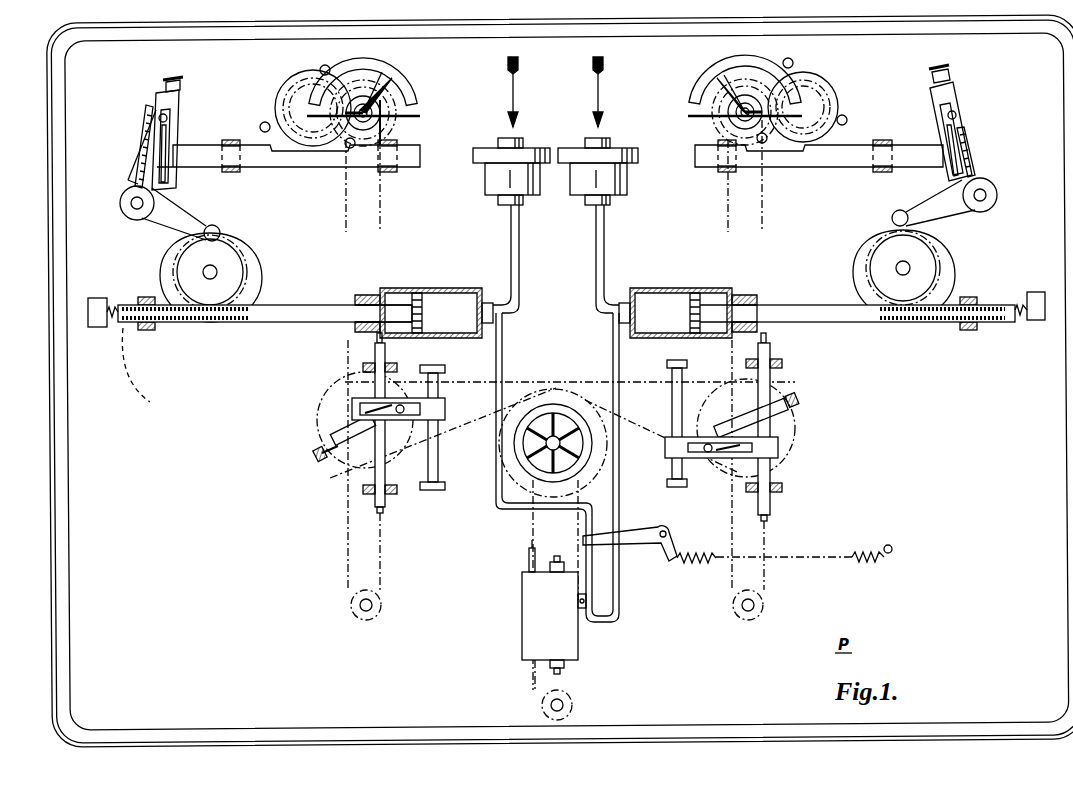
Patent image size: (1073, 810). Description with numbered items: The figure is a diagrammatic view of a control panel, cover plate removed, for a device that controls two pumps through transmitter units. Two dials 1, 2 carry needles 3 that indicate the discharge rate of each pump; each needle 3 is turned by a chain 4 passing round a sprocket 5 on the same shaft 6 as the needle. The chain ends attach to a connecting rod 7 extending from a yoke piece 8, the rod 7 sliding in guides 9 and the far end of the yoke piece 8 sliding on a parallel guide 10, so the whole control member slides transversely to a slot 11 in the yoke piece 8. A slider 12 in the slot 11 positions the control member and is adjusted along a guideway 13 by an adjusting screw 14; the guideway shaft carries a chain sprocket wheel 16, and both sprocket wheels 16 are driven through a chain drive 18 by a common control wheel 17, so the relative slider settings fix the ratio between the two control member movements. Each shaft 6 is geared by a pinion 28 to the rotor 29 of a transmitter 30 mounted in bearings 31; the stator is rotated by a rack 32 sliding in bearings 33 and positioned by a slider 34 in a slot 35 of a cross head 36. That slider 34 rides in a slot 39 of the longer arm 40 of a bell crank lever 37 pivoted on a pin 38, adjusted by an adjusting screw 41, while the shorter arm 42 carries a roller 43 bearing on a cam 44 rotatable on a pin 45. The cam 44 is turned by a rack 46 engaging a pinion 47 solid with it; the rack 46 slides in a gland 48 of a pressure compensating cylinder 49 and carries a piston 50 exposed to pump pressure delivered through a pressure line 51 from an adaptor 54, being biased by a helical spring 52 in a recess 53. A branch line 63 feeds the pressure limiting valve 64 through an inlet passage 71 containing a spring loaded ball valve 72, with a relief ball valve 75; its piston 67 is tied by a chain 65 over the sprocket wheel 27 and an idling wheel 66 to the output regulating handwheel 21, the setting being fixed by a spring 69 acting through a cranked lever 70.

The dial 1 is at (405, 84).
The dial 2 is at (735, 72).
The needle 3 is at (395, 96).
The chain 4 is at (381, 205).
The sprocket 5 is at (385, 115).
The shaft 6 is at (385, 120).
The connecting rod 7 is at (386, 355).
The yoke piece 8 is at (352, 400).
The guide 9 is at (363, 366).
The guide 10 is at (440, 390).
The slot 11 is at (360, 406).
The slider 12 is at (356, 416).
The guideway 13 is at (324, 448).
The adjusting screw 14 is at (316, 455).
The chain sprocket wheel 16 is at (352, 470).
The common control wheel 17 is at (512, 472).
The chain drive 18 is at (450, 432).
The output regulating handwheel 21 is at (548, 412).
The sprocket wheel 27 is at (578, 438).
The pinion 28 is at (375, 95).
The rotor 29 is at (300, 92).
The transmitter 30 is at (276, 128).
The bearing 31 is at (321, 67).
The rack 32 is at (205, 150).
The bearing 33 is at (234, 172).
The slider 34 is at (159, 117).
The slot 35 is at (168, 145).
The cross head 36 is at (163, 107).
The bell crank lever 37 is at (165, 228).
The pin 38 is at (133, 217).
The slot 39 is at (148, 150).
The longer arm 40 is at (133, 172).
The adjusting screw 41 is at (175, 79).
The shorter arm 42 is at (190, 210).
The roller 43 is at (221, 224).
The cam 44 is at (246, 250).
The pin 45 is at (217, 272).
The rack 46 is at (276, 314).
The pinion 47 is at (244, 286).
The gland 48 is at (372, 297).
The pressure compensating cylinder 49 is at (462, 290).
The piston 50 is at (420, 293).
The pressure line 51 is at (596, 228).
The helical spring 52 is at (100, 330).
The recess 53 is at (137, 372).
The adaptor 54 is at (578, 160).
The branch line 63 is at (502, 362).
The pressure limiting valve 64 is at (540, 607).
The chain 65 is at (582, 496).
The idling wheel 66 is at (574, 698).
The piston 67 is at (529, 560).
The spring 69 is at (700, 562).
The cranked lever 70 is at (650, 536).
The inlet passage 71 is at (616, 618).
The spring loaded ball valve 72 is at (556, 560).
The spring loaded ball valve 75 is at (587, 600).